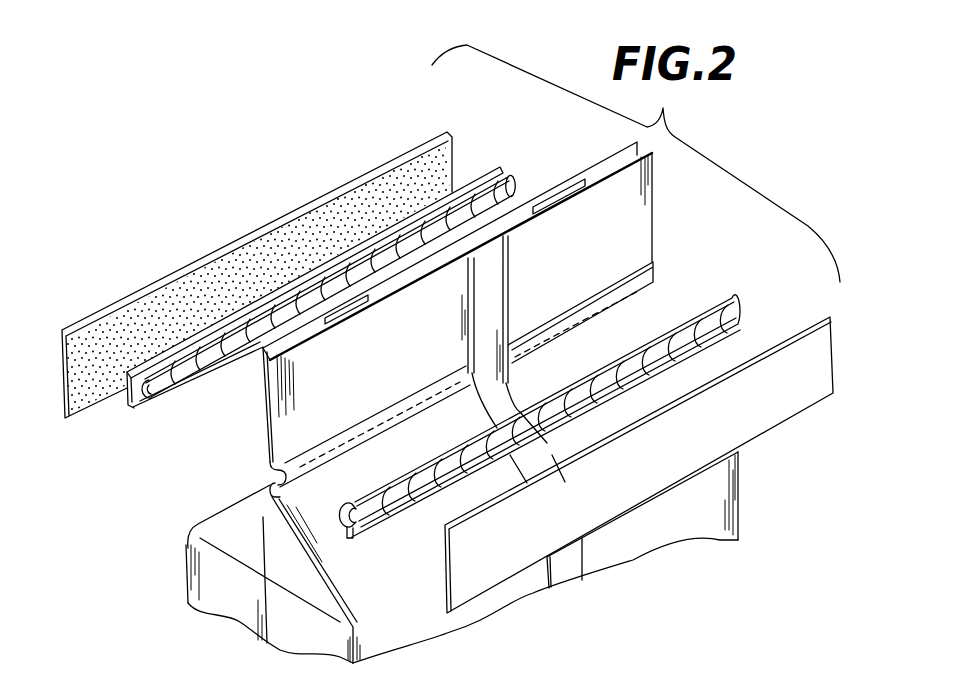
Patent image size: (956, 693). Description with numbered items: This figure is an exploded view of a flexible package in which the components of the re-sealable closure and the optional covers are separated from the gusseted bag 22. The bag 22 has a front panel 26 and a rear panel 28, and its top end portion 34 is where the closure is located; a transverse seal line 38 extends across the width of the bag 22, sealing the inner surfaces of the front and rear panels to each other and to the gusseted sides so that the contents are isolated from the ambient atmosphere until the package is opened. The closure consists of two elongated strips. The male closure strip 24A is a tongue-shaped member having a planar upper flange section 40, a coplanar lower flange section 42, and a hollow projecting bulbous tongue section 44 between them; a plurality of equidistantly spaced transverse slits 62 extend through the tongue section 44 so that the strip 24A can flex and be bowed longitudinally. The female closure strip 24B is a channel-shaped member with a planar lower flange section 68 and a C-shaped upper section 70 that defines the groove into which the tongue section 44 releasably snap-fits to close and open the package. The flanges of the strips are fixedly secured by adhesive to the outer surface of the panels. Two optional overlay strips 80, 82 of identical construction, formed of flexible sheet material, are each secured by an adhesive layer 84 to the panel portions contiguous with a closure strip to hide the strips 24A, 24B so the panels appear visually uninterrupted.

The gusseted bag 22 is at (459, 557).
The male closure strip 24A is at (503, 171).
The female closure strip 24B is at (745, 310).
The front panel 26 is at (185, 553).
The rear panel 28 is at (712, 497).
The top end portion 34 is at (617, 218).
The transverse seal line 38 is at (690, 348).
The upper flange section 40 is at (415, 312).
The lower flange section 42 is at (233, 343).
The bulbous tongue section 44 is at (147, 397).
The transverse slits 62 is at (340, 283).
The lower flange section 68 is at (352, 540).
The C-shaped upper section 70 is at (702, 316).
The overlay strip 80 is at (106, 306).
The overlay strip 82 is at (645, 487).
The adhesive layer 84 is at (374, 208).